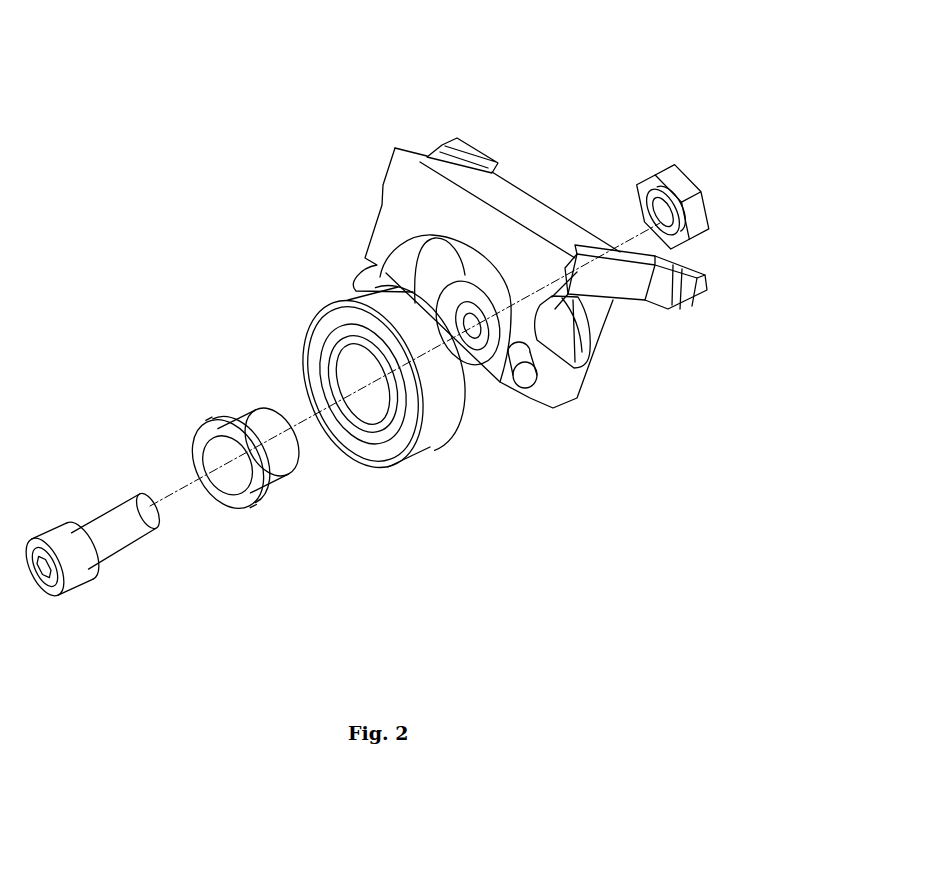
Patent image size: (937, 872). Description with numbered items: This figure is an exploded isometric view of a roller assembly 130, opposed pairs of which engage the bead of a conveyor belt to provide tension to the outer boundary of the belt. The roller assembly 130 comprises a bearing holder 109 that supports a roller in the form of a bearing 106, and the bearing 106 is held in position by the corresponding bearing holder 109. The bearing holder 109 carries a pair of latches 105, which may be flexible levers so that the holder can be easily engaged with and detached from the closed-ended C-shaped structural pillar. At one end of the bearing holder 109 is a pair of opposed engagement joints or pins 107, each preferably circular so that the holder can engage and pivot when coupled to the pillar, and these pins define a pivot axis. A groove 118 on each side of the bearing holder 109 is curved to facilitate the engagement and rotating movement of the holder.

The roller assembly 130 is at (141, 304).
The bearing holder 109 is at (347, 225).
The latches 105 is at (483, 160).
The groove 118 is at (582, 333).
The engagement joints or pins 107 is at (525, 375).
The bearing 106 is at (433, 410).